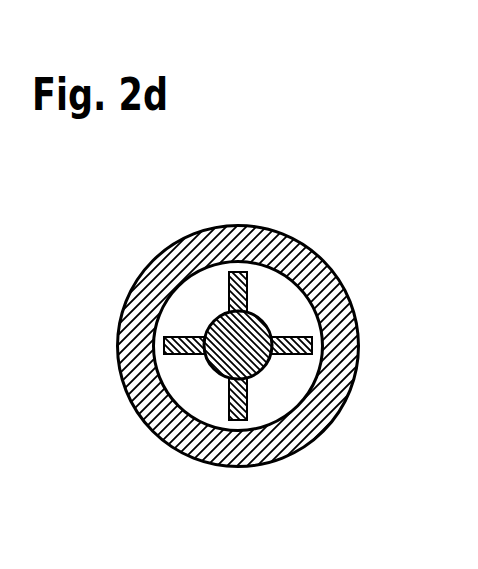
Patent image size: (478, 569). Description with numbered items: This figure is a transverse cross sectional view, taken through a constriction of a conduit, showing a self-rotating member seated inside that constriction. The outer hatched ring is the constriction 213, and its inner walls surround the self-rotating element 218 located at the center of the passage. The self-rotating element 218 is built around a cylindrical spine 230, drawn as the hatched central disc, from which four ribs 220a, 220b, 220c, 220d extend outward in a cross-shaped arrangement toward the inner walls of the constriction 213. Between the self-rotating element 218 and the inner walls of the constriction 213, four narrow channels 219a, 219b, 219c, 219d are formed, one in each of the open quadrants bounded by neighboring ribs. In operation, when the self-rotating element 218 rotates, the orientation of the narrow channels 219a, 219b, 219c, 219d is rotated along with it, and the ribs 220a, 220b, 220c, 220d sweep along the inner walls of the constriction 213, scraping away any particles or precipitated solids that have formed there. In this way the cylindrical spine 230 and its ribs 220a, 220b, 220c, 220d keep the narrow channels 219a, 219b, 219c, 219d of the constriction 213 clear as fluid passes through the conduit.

The constriction 213 is at (138, 378).
The self-rotating element 218 is at (253, 303).
The narrow channel 219a is at (218, 298).
The narrow channel 219b is at (282, 298).
The narrow channel 219c is at (273, 380).
The narrow channel 219d is at (220, 363).
The rib 220a is at (238, 272).
The rib 220b is at (310, 337).
The rib 220c is at (243, 410).
The rib 220d is at (165, 341).
The cylindrical spine 230 is at (192, 390).